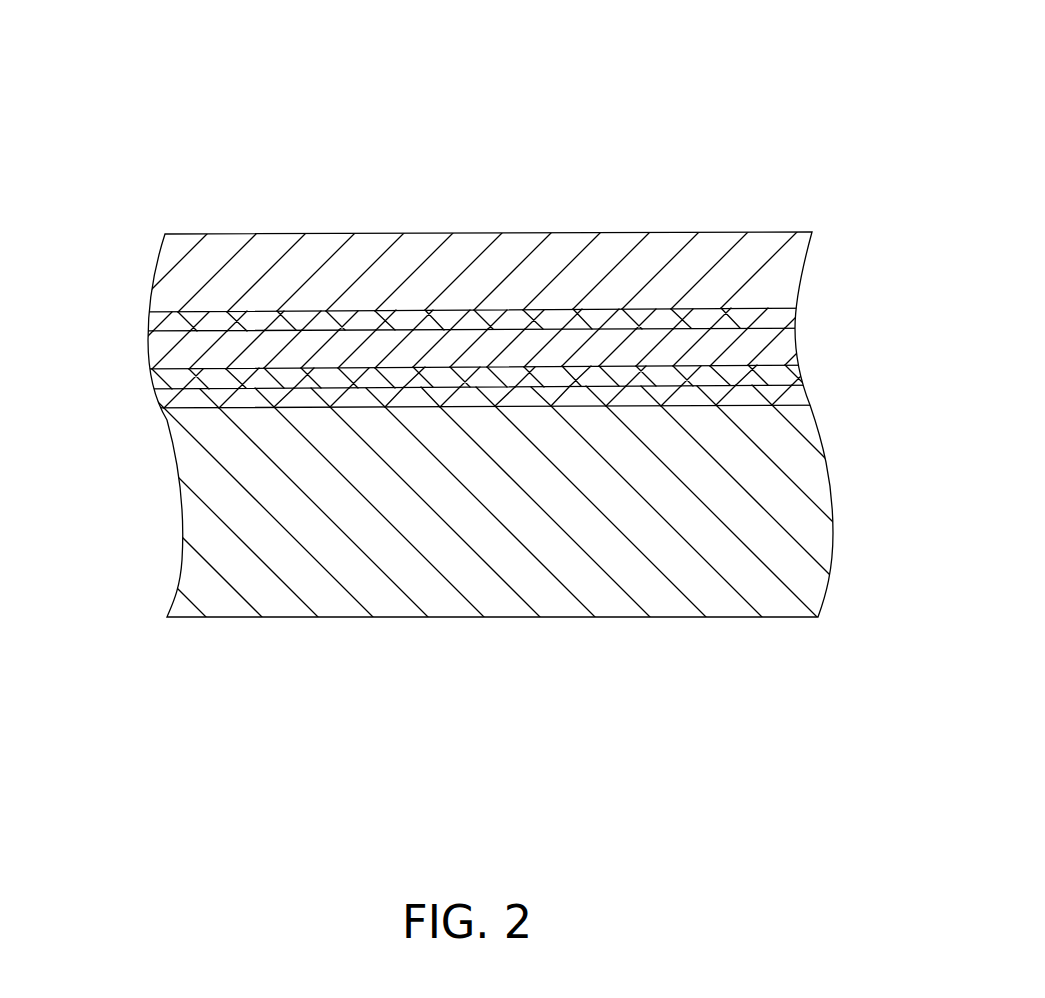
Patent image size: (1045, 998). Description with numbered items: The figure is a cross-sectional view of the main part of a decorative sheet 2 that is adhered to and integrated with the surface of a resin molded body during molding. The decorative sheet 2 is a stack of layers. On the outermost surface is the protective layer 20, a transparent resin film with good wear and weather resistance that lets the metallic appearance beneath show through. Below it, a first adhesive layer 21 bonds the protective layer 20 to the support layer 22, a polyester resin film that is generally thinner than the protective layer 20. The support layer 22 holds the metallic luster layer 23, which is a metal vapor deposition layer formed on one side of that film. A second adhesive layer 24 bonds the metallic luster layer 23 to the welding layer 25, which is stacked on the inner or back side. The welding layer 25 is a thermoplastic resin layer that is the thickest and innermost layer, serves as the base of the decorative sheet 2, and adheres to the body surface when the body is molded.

The decorative sheet 2 is at (597, 135).
The protective layer 20 is at (327, 232).
The first adhesive layer 21 is at (797, 316).
The support layer 22 is at (148, 350).
The metallic luster layer 23 is at (803, 368).
The second adhesive layer 24 is at (156, 404).
The welding layer 25 is at (453, 618).